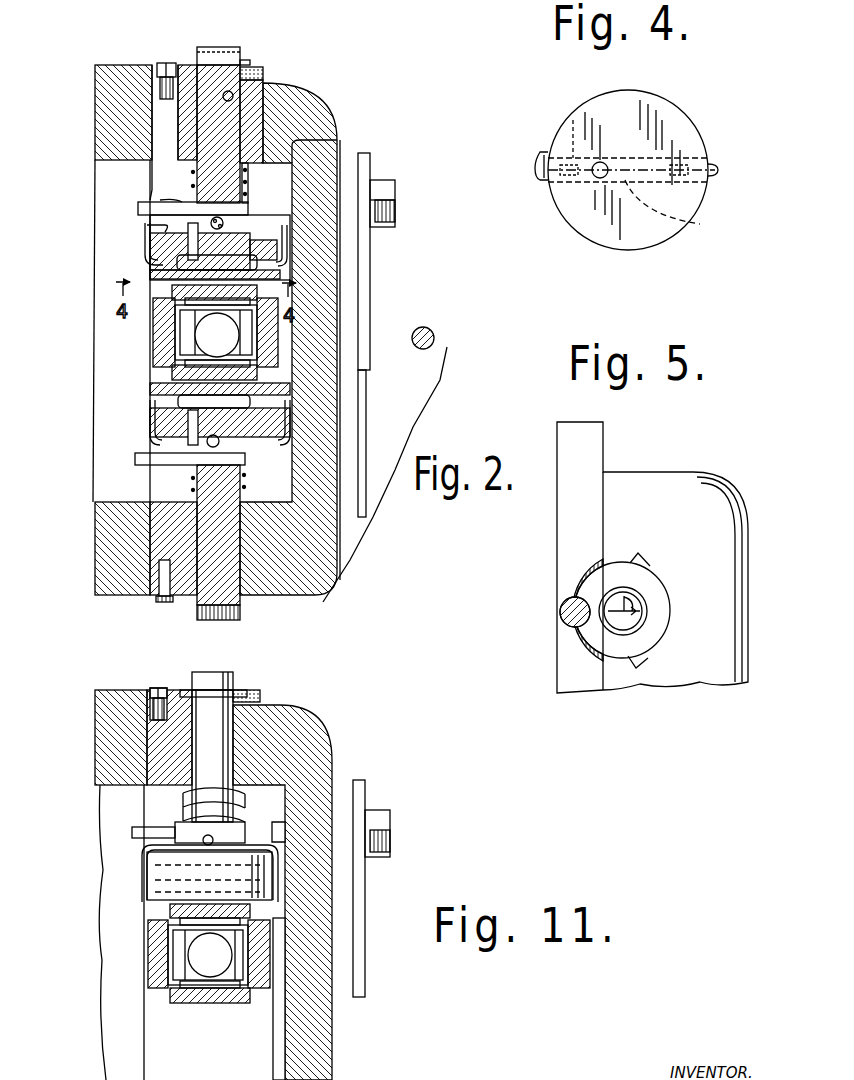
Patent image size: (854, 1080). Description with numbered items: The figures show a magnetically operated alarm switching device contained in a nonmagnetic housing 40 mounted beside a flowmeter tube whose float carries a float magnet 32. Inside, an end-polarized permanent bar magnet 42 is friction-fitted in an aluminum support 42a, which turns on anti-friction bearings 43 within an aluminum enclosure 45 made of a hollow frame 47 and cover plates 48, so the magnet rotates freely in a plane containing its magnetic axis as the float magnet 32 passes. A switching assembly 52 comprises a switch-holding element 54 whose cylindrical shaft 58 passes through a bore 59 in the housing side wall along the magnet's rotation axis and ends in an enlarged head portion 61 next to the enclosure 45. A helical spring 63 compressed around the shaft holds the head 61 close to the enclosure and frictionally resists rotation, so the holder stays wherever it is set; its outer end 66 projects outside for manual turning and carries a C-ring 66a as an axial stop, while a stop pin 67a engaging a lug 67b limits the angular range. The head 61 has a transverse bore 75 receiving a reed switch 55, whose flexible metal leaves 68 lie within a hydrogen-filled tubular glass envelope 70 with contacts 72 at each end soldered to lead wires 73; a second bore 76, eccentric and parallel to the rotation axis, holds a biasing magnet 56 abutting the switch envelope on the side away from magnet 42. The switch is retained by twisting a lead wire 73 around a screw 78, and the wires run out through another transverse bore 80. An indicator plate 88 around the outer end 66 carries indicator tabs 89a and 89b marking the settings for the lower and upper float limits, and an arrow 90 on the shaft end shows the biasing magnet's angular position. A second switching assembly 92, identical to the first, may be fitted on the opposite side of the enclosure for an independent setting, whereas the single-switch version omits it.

In FIG. 2, the float magnet 32 is at (429, 329).
In FIG. 2, the housing 40 is at (286, 575).
In FIG. 5, the housing 40 is at (565, 512).
In FIG. 11, the housing 40 is at (318, 742).
In FIG. 2, the permanent bar magnet 42 is at (160, 337).
In FIG. 11, the permanent bar magnet 42 is at (218, 962).
In FIG. 2, the aluminum support 42a is at (230, 330).
In FIG. 11, the aluminum support 42a is at (235, 940).
In FIG. 2, the anti-friction bearings 43 is at (153, 320).
In FIG. 11, the anti-friction bearings 43 is at (165, 919).
In FIG. 2, the aluminum enclosure 45 is at (270, 345).
In FIG. 11, the aluminum enclosure 45 is at (262, 958).
In FIG. 2, the hollow frame 47 is at (167, 353).
In FIG. 11, the hollow frame 47 is at (160, 975).
In FIG. 2, the cover plates 48 is at (300, 290).
In FIG. 11, the cover plates 48 is at (175, 906).
In FIG. 2, the switching assembly 52 is at (207, 113).
In FIG. 11, the switching assembly 52 is at (240, 735).
In FIG. 2, the switch-holding element 54 is at (153, 67).
In FIG. 11, the switch-holding element 54 is at (195, 740).
In FIG. 2, the reed switch 55 is at (295, 223).
In FIG. 4, the reed switch 55 is at (708, 224).
In FIG. 11, the reed switch 55 is at (150, 878).
In FIG. 2, the biasing magnet 56 is at (147, 242).
In FIG. 11, the biasing magnet 56 is at (132, 832).
In FIG. 2, the cylindrical shaft 58 is at (243, 118).
In FIG. 2, the bore 59 is at (233, 95).
In FIG. 2, the head portion 61 is at (150, 274).
In FIG. 4, the head portion 61 is at (605, 100).
In FIG. 2, the helical spring 63 is at (130, 173).
In FIG. 2, the outer end 66 is at (197, 54).
In FIG. 5, the outer end 66 is at (615, 622).
In FIG. 11, the outer end 66 is at (202, 672).
In FIG. 2, the C-ring 66a is at (243, 66).
In FIG. 5, the C-ring 66a is at (650, 615).
In FIG. 11, the C-ring 66a is at (246, 692).
In FIG. 2, the stop pin 67a is at (163, 203).
In FIG. 2, the lug 67b is at (300, 150).
In FIG. 2, the flexible metal leaves 68 is at (240, 208).
In FIG. 2, the tubular glass envelope 70 is at (143, 255).
In FIG. 2, the contacts 72 is at (143, 263).
In FIG. 2, the lead wires 73 is at (147, 268).
In FIG. 4, the lead wires 73 is at (540, 152).
In FIG. 2, the bore 75 is at (300, 275).
In FIG. 4, the bore 75 is at (573, 118).
In FIG. 2, the second bore 76 is at (153, 230).
In FIG. 4, the second bore 76 is at (596, 178).
In FIG. 2, the screw 78 is at (147, 250).
In FIG. 4, the screw 78 is at (537, 170).
In FIG. 2, the transverse bore 80 is at (244, 177).
In FIG. 2, the indicator plate 88 is at (258, 70).
In FIG. 5, the indicator plate 88 is at (656, 590).
In FIG. 11, the indicator plate 88 is at (256, 697).
In FIG. 5, the indicator tab 89a is at (645, 664).
In FIG. 5, the indicator tab 89b is at (642, 560).
In FIG. 5, the arrow 90 is at (600, 588).
In FIG. 2, the second switching assembly 92 is at (172, 480).